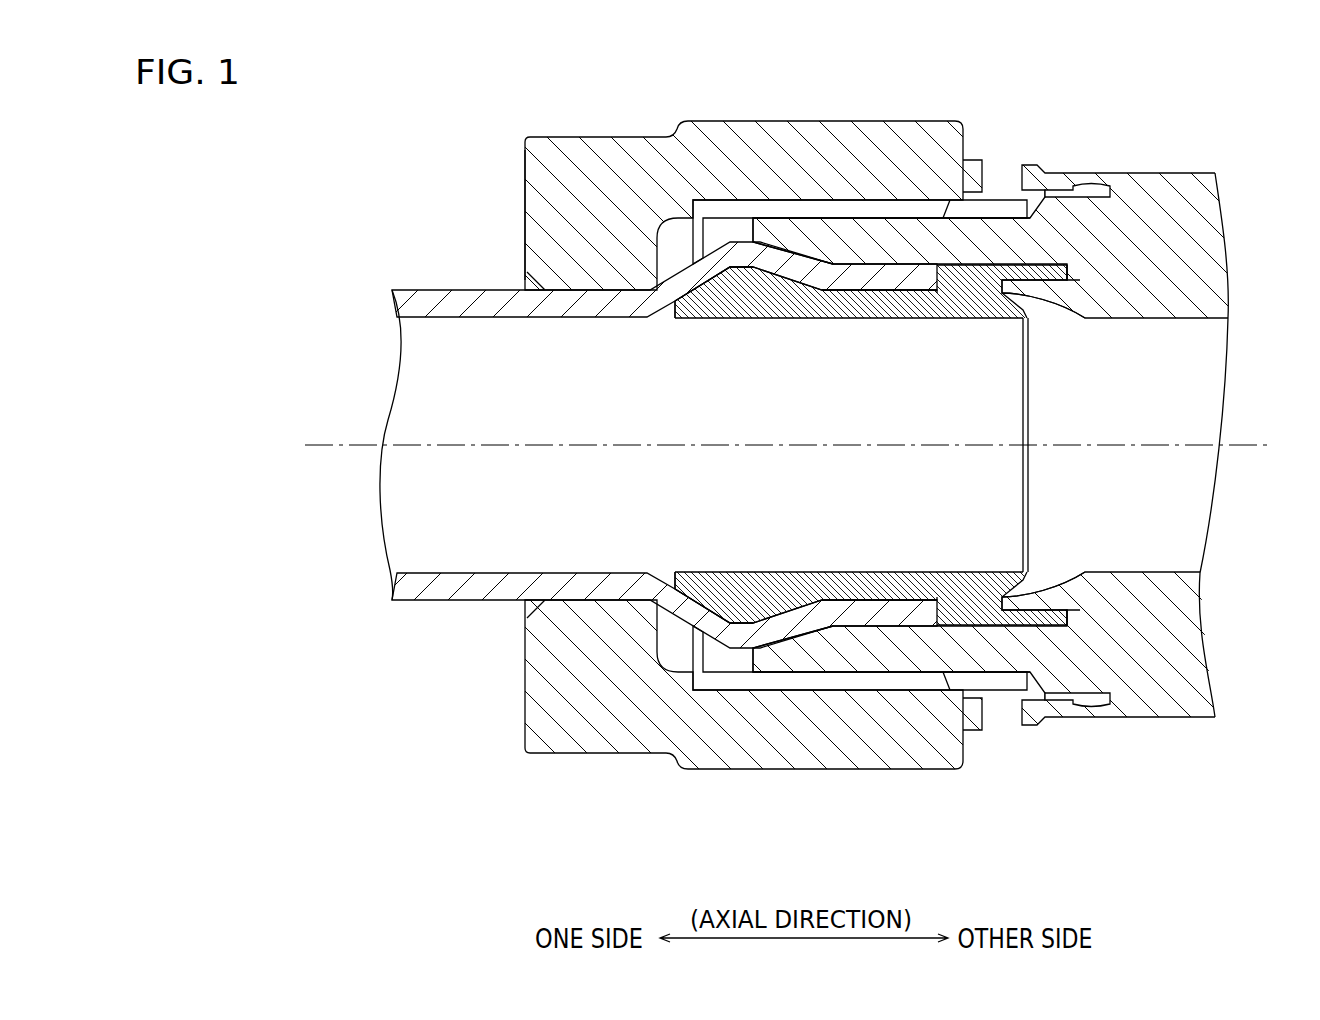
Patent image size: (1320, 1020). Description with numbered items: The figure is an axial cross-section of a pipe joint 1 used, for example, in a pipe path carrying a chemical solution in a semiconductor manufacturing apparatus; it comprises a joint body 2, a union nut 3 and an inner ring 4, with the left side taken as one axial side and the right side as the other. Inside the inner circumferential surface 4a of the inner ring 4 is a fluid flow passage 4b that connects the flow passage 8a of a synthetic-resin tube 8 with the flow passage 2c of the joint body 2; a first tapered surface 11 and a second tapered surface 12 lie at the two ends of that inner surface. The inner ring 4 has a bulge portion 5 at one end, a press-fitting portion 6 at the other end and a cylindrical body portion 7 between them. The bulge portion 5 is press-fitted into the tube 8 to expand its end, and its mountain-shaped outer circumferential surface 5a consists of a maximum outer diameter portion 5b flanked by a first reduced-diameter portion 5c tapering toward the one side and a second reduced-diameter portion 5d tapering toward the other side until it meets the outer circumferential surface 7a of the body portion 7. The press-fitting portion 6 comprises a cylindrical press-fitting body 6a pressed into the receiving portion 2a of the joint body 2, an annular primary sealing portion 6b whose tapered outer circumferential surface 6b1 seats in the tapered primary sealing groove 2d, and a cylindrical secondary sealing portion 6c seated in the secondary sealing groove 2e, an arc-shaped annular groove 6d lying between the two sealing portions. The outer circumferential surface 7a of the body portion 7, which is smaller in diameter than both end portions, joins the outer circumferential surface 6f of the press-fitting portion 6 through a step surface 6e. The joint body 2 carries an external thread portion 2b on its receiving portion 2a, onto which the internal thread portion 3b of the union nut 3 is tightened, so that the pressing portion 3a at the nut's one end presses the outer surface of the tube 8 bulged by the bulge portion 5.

The pipe joint 1 is at (428, 132).
The joint body 2 is at (1168, 164).
The receiving portion 2a is at (895, 240).
The external thread portion 2b is at (1000, 210).
The flow passage 2c is at (1112, 481).
The primary sealing groove 2d is at (1000, 318).
The secondary sealing groove 2e is at (1075, 265).
The union nut 3 is at (598, 126).
The pressing portion 3a is at (525, 195).
The internal thread portion 3b is at (735, 208).
The inner ring 4 is at (826, 327).
The inner circumferential surface 4a is at (822, 573).
The fluid flow passage 4b is at (839, 481).
The bulge portion 5 is at (750, 318).
The outer circumferential surface 5a is at (648, 826).
The maximum outer diameter portion 5b is at (735, 633).
The first reduced-diameter portion 5c is at (683, 627).
The second reduced-diameter portion 5d is at (785, 625).
The press-fitting portion 6 is at (955, 326).
The press-fitting body 6a is at (960, 595).
The primary sealing portion 6b is at (1010, 580).
The outer circumferential surface 6b1 is at (1063, 577).
The secondary sealing portion 6c is at (1052, 618).
The annular groove 6d is at (1030, 627).
The step surface 6e is at (920, 627).
The outer circumferential surface 6f is at (993, 627).
The body portion 7 is at (880, 318).
The outer circumferential surface 7a is at (870, 605).
The tube 8 is at (438, 300).
The flow passage 8a is at (507, 481).
The first tapered surface 11 is at (700, 320).
The second tapered surface 12 is at (1029, 330).